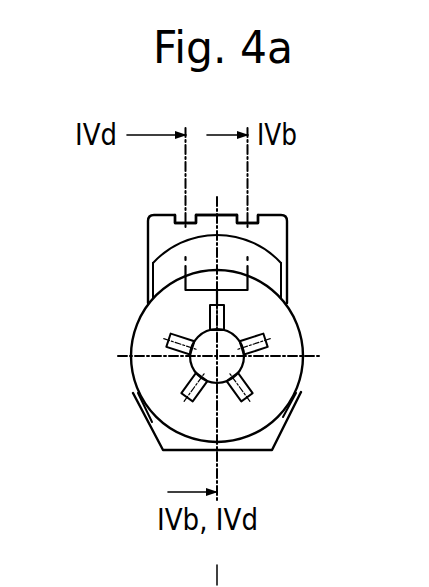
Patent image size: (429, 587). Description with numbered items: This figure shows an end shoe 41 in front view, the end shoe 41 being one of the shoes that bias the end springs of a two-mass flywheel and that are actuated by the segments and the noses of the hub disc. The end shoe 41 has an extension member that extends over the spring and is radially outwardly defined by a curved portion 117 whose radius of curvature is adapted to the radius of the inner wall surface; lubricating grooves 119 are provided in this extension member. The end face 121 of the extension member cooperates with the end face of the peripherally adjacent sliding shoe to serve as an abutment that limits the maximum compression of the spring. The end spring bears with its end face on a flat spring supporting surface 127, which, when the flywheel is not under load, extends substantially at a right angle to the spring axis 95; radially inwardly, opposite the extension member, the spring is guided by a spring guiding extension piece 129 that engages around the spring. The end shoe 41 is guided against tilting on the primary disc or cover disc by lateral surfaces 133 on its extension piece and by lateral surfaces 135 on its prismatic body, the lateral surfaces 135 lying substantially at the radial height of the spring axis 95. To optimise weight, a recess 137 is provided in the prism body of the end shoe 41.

The end shoe 41 is at (318, 270).
The spring axis 95 is at (238, 360).
The curved portion 117 is at (228, 212).
The lubricating grooves 119 is at (175, 214).
The end face 121 is at (158, 231).
The spring supporting surface 127 is at (262, 313).
The spring guiding extension piece 129 is at (248, 447).
The lateral surfaces 133 is at (143, 253).
The lateral surfaces 135 is at (127, 367).
The recess 137 is at (228, 363).